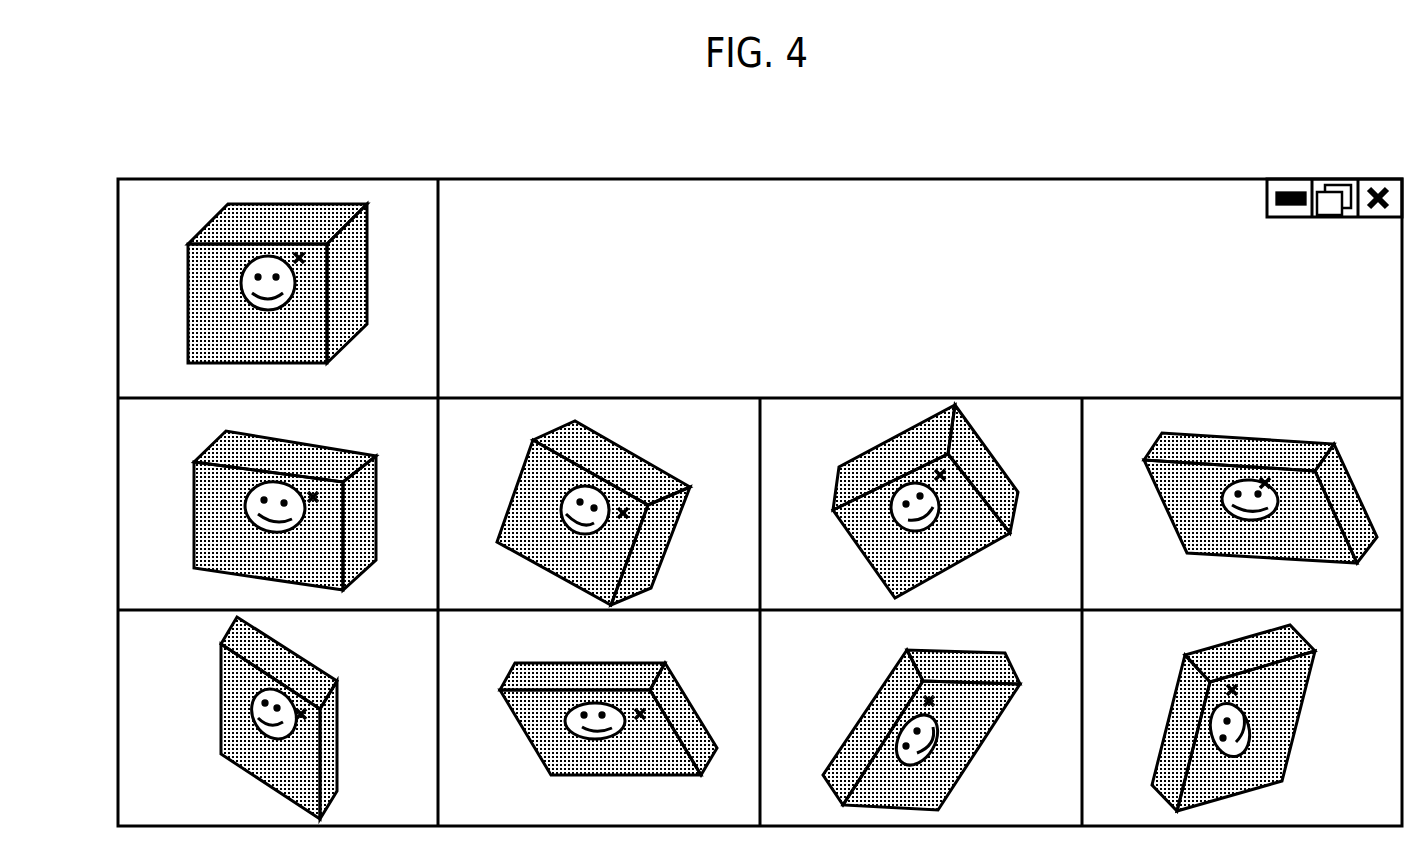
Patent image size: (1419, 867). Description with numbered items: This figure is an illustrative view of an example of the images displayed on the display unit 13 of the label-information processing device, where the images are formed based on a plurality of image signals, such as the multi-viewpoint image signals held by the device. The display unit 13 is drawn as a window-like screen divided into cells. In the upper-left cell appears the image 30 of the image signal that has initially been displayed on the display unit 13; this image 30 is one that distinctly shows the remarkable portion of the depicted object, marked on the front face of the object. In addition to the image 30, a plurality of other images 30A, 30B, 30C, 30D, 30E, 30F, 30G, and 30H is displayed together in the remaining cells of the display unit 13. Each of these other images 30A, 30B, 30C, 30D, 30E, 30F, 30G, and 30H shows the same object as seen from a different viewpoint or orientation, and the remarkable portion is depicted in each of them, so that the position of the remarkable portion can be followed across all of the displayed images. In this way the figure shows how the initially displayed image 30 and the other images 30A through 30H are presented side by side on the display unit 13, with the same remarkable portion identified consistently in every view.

The display unit 13 is at (1098, 202).
The image 30 is at (307, 250).
The other image 30A is at (277, 503).
The other image 30B is at (596, 513).
The other image 30C is at (914, 501).
The other image 30D is at (1233, 487).
The other image 30E is at (270, 718).
The other image 30F is at (606, 711).
The other image 30G is at (929, 730).
The other image 30H is at (1246, 718).